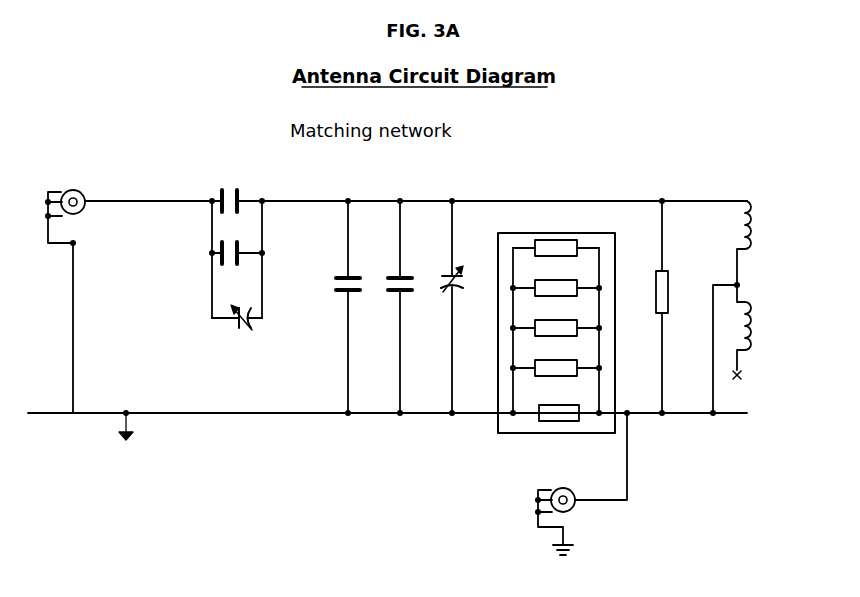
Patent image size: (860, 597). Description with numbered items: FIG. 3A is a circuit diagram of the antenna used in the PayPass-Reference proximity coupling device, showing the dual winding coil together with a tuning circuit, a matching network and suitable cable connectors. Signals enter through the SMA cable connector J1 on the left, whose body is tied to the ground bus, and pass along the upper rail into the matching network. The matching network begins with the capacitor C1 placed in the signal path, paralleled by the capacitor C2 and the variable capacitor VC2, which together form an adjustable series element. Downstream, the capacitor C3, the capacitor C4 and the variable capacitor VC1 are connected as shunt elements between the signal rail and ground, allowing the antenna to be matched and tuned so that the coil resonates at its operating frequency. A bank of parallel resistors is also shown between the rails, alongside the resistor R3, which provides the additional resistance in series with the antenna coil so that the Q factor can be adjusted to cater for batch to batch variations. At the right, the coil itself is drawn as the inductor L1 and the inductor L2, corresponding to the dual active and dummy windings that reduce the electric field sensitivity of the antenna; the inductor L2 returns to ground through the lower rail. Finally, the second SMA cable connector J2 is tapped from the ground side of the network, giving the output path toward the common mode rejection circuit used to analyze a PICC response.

The SMA connector J1 (input) J1 is at (65, 278).
The capacitor C1 is at (237, 187).
The capacitor C2 is at (226, 259).
The variable capacitor VC2 is at (237, 331).
The capacitor C3 is at (348, 318).
The capacitor C4 is at (400, 318).
The variable capacitor VC1 is at (450, 292).
The resistor R3 is at (651, 307).
The inductor L1 is at (753, 243).
The inductor L2 is at (739, 349).
The SMA connector J2 (output) J2 is at (581, 484).